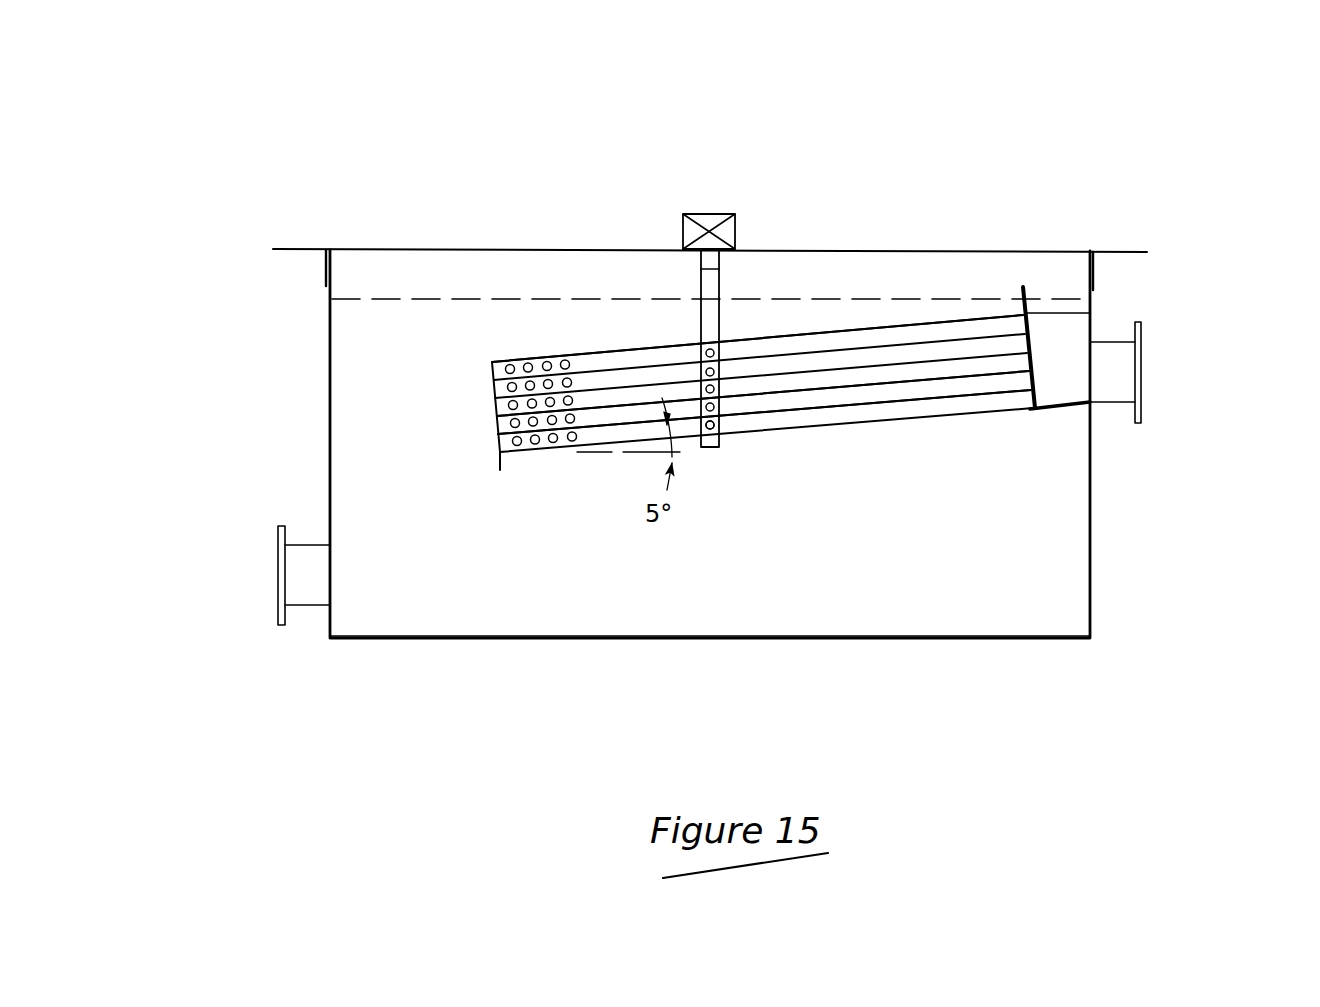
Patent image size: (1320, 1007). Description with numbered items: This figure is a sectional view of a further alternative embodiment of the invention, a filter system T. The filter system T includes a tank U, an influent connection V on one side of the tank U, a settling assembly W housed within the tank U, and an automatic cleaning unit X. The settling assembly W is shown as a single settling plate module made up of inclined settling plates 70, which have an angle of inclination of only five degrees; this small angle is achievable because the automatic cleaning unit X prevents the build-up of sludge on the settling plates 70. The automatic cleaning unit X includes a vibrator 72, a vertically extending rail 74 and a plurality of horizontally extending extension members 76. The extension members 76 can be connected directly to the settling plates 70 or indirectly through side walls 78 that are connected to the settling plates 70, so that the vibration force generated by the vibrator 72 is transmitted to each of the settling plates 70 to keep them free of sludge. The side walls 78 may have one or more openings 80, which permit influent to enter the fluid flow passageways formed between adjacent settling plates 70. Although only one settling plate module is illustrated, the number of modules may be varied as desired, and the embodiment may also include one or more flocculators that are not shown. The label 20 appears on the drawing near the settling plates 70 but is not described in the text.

The plate pack 20 is at (791, 417).
The settling plates 70 is at (880, 404).
The vibrator 72 is at (718, 210).
The vertically extending rail 74 is at (722, 326).
The extension members 76 is at (717, 431).
The side walls 78 is at (778, 421).
The openings 80 is at (573, 440).
The filter system T is at (556, 138).
The tank U is at (1092, 550).
The influent connection V is at (277, 571).
The settling assembly W is at (872, 329).
The automatic cleaning unit X is at (1288, 328).